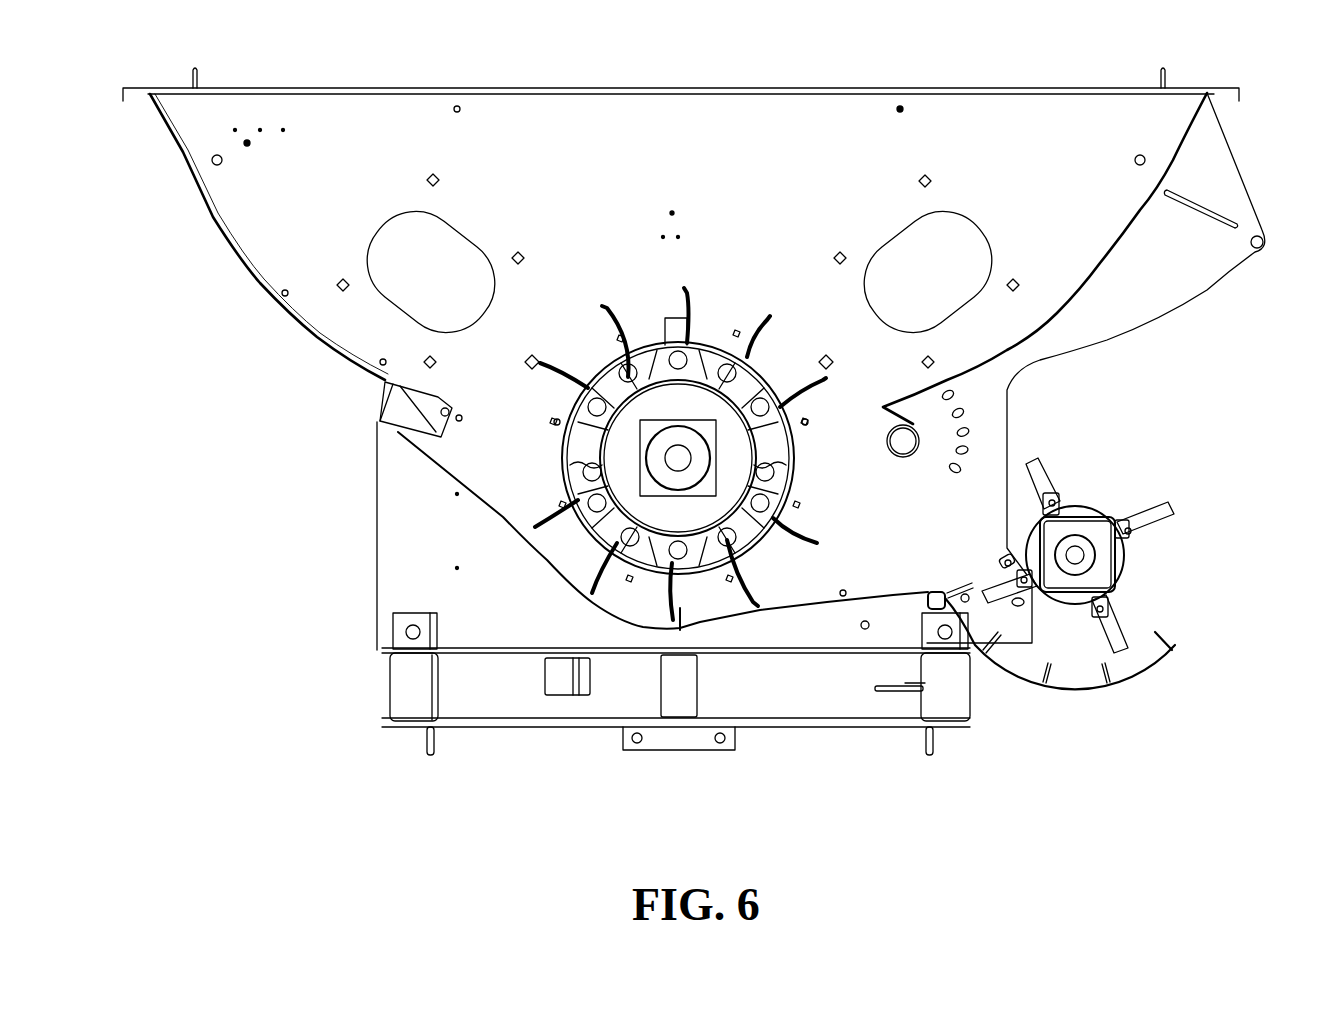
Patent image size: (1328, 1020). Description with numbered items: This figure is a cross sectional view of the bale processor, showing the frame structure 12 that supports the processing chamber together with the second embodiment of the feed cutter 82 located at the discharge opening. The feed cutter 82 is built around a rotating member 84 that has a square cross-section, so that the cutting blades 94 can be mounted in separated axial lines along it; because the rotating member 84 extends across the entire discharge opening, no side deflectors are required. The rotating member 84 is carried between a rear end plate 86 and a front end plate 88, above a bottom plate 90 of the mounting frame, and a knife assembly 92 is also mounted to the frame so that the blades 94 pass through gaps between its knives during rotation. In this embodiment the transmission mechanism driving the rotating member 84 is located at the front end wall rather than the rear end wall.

The frame structure 12 is at (608, 147).
The feed cutter 82 is at (1122, 597).
The rotating member 84 is at (1088, 503).
The rear end plate 86 is at (1133, 680).
The front end plate 88 is at (1042, 683).
The bottom plate 90 is at (945, 597).
The knife assembly 92 is at (1038, 470).
The blades 94 is at (740, 620).